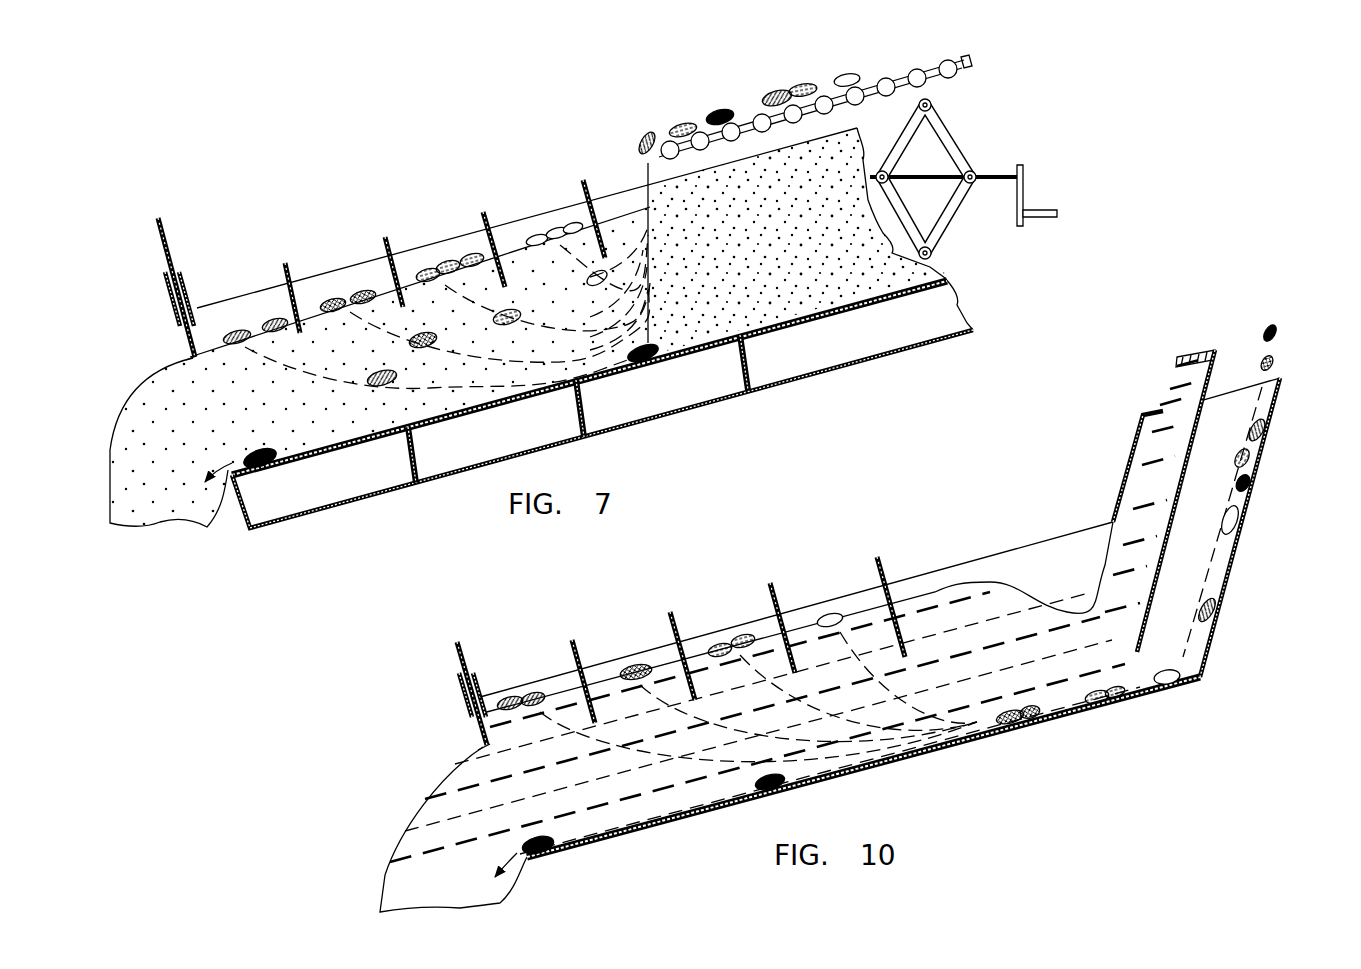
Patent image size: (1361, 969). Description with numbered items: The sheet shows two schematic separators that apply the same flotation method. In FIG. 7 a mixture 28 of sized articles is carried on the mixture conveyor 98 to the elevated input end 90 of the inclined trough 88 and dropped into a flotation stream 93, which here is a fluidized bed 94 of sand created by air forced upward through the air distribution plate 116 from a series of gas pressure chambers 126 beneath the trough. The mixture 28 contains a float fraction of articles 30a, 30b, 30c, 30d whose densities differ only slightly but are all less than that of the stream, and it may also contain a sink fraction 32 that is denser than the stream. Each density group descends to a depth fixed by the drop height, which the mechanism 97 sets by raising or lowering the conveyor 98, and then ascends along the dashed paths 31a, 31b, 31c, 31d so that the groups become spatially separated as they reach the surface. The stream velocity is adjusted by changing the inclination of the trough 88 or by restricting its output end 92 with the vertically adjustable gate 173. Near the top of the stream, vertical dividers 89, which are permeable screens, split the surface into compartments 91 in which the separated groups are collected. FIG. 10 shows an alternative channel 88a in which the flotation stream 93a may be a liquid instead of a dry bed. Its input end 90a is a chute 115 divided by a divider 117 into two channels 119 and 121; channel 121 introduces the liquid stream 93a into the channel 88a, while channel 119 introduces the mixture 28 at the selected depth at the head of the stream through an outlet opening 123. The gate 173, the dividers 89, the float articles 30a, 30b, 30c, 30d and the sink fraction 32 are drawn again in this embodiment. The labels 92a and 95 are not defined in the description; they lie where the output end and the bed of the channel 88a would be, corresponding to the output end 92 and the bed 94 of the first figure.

In FIG. 7, the mixture 28 is at (716, 99).
In FIG. 10, the mixture 28 is at (1284, 362).
In FIG. 7, the float fraction article 30a is at (238, 344).
In FIG. 10, the float fraction article 30a is at (530, 708).
In FIG. 7, the float fraction article 30b is at (343, 311).
In FIG. 10, the float fraction article 30b is at (637, 680).
In FIG. 7, the float fraction article 30c is at (450, 274).
In FIG. 10, the float fraction article 30c is at (733, 654).
In FIG. 7, the float fraction article 30d is at (553, 245).
In FIG. 10, the float fraction article 30d is at (833, 627).
In FIG. 7, the ascension path 31a is at (432, 389).
In FIG. 7, the ascension path 31b is at (513, 352).
In FIG. 7, the ascension path 31c is at (594, 328).
In FIG. 7, the ascension path 31d is at (622, 293).
In FIG. 7, the sink fraction 32 is at (260, 450).
In FIG. 10, the sink fraction 32 is at (545, 838).
In FIG. 7, the inclined trough 88 is at (228, 297).
In FIG. 10, the channel 88a is at (502, 687).
In FIG. 7, the vertical dividers 89 is at (383, 242).
In FIG. 10, the vertical dividers 89 is at (667, 632).
In FIG. 7, the input end 90 is at (977, 252).
In FIG. 10, the input end 90a is at (1158, 394).
In FIG. 7, the compartments 91 is at (527, 225).
In FIG. 10, the compartments 91 is at (807, 615).
In FIG. 7, the output end 92 is at (184, 356).
In FIG. 10, the deck edge (slotted embodiment) 92a is at (468, 748).
In FIG. 7, the flotation stream 93 is at (126, 392).
In FIG. 10, the flotation stream 93a is at (423, 787).
In FIG. 7, the fluidized bed 94 is at (152, 437).
In FIG. 10, the slotted sorting deck 95 is at (420, 853).
In FIG. 7, the mechanism 97 is at (960, 137).
In FIG. 7, the mixture conveyor 98 is at (970, 66).
In FIG. 10, the chute 115 is at (1266, 488).
In FIG. 7, the air distribution plate 116 is at (745, 335).
In FIG. 10, the divider 117 is at (1138, 625).
In FIG. 10, the channel 119 is at (1225, 408).
In FIG. 10, the channel 121 is at (1140, 443).
In FIG. 10, the outlet opening 123 is at (1143, 668).
In FIG. 7, the gas pressure chambers 126 is at (302, 480).
In FIG. 7, the vertically adjustable gate 173 is at (170, 238).
In FIG. 10, the vertically adjustable gate 173 is at (459, 645).